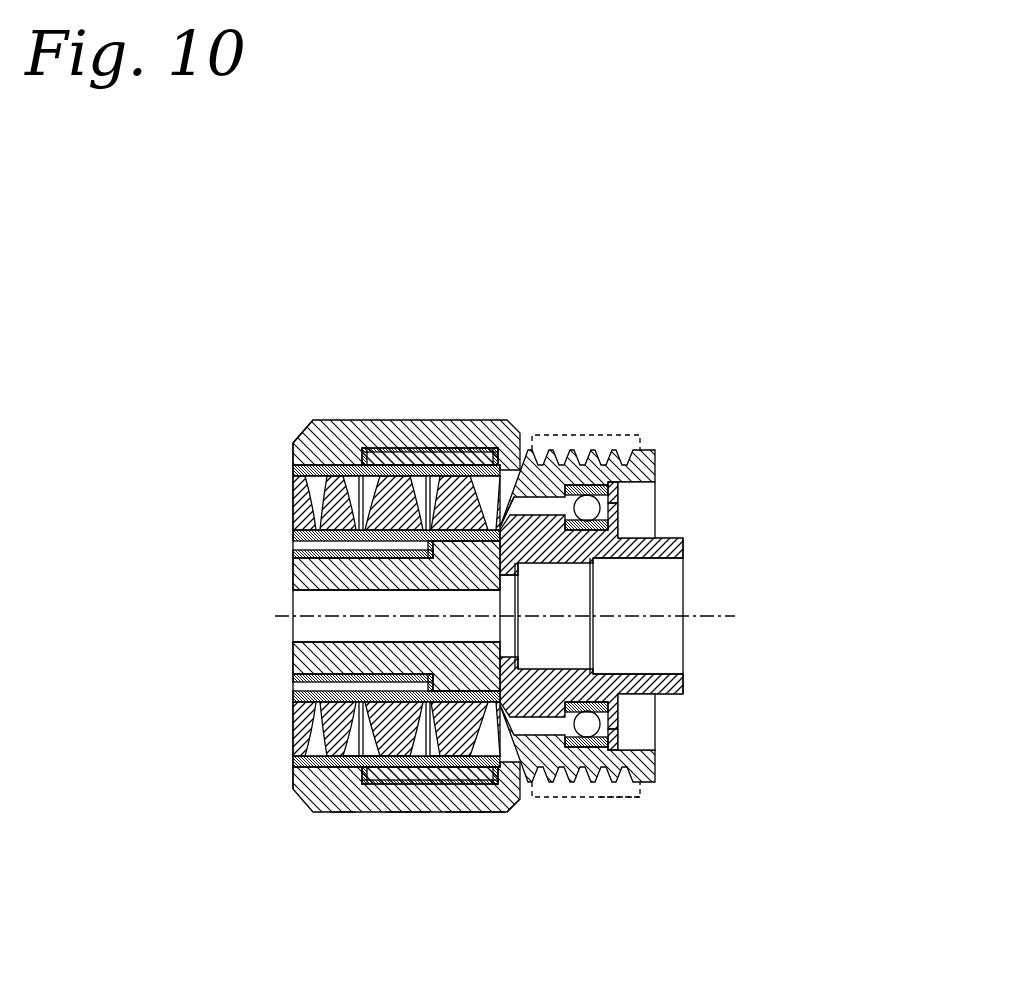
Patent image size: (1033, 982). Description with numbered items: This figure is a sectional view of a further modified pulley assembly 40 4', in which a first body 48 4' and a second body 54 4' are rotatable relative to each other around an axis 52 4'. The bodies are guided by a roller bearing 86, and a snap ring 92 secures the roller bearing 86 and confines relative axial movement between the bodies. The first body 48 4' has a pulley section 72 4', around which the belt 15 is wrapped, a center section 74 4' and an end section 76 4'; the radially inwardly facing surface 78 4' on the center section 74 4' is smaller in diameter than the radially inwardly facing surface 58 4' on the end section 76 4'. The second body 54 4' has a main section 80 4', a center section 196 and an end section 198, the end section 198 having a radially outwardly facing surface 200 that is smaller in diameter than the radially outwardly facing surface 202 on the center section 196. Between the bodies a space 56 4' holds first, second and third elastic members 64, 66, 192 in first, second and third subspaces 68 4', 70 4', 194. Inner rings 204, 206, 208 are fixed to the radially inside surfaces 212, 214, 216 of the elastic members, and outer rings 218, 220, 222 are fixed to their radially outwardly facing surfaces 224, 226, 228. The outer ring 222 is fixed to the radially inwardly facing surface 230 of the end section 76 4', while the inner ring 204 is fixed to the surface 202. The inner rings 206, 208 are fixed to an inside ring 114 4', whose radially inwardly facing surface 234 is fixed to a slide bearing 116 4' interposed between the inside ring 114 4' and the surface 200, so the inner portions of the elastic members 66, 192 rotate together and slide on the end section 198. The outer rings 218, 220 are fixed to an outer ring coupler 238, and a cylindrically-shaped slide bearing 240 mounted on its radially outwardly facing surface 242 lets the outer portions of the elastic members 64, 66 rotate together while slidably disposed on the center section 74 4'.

The pulley assembly 40 4' is at (585, 446).
The first body 48 4' is at (625, 619).
The axis 52 4' is at (674, 616).
The second body 54 4' is at (649, 616).
The space 56 4' is at (336, 498).
The radially inwardly facing surface 58 4' is at (384, 640).
The first elastic member 64 is at (498, 447).
The second elastic member 66 is at (395, 448).
The first subspace 68 4' is at (441, 833).
The second subspace 70 4' is at (330, 771).
The pulley section 72 4' is at (598, 680).
The center section 74 4' is at (463, 863).
The end section 76 4' is at (322, 838).
The radially inwardly facing surface 78 4' is at (391, 851).
The main section 80 4' is at (671, 608).
The roller bearing 86 is at (598, 487).
The snap ring 92 is at (635, 482).
The inside ring 114 4' is at (288, 608).
The slide bearing 116 4' is at (302, 616).
The belt 15 is at (640, 800).
The third elastic member 192 is at (308, 740).
The third subspace 194 is at (374, 738).
The center section 196 is at (508, 583).
The end section 198 is at (302, 580).
The radially outwardly facing surface 200 is at (298, 695).
The radially outwardly facing surface 202 is at (445, 700).
The inner ring 204 is at (528, 450).
The inner ring 206 is at (453, 447).
The inner ring 208 is at (298, 537).
The radially inside surface 212 is at (462, 560).
The radially inside surface 214 is at (396, 560).
The radially inside surface 216 is at (325, 558).
The outer ring 218 is at (479, 448).
The outer ring 220 is at (378, 466).
The outer ring 222 is at (296, 470).
The radially outwardly facing surface 224 is at (520, 805).
The radially outwardly facing surface 226 is at (398, 795).
The radially outwardly facing surface 228 is at (320, 768).
The radially inwardly facing surface 230 is at (316, 420).
The radially inwardly facing surface 234 is at (350, 690).
The outer ring coupler 238 is at (441, 447).
The slide bearing 240 is at (487, 800).
The radially outwardly facing surface 242 is at (433, 447).